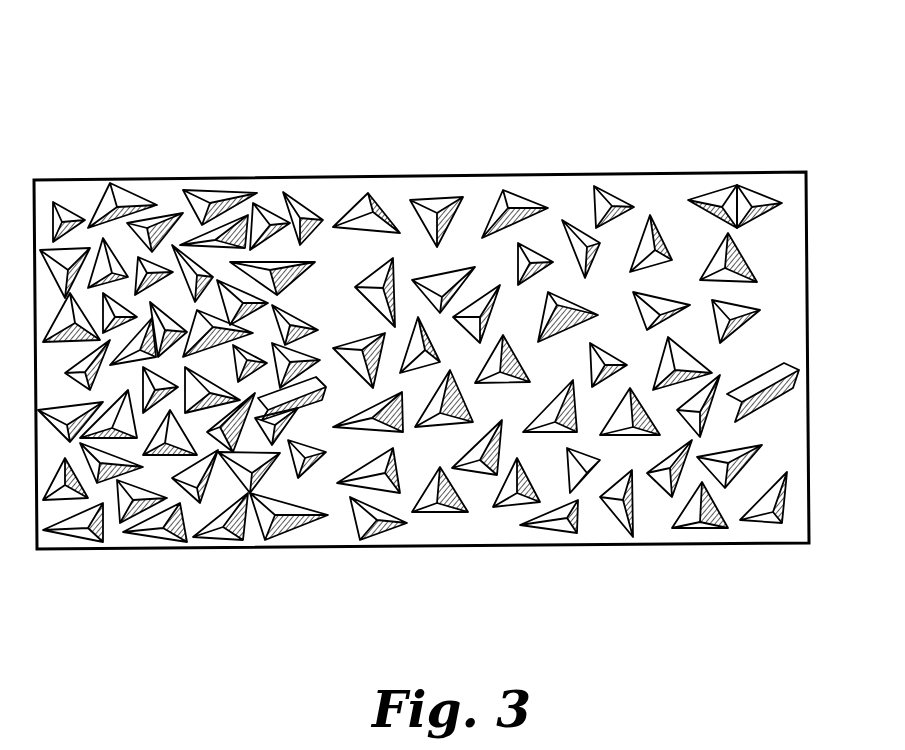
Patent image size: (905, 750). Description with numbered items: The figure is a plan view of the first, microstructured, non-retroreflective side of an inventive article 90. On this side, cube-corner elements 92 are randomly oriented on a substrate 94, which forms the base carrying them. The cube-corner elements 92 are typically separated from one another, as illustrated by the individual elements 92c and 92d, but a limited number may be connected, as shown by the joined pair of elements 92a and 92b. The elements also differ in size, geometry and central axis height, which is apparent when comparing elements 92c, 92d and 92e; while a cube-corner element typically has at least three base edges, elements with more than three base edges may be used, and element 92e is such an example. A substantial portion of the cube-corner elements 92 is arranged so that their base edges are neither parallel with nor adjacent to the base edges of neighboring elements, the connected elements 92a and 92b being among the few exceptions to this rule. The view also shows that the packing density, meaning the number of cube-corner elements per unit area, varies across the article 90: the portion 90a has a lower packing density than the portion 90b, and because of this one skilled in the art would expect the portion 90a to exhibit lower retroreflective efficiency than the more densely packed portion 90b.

The inventive article 90 is at (750, 66).
The portion 90a is at (810, 603).
The portion 90b is at (38, 612).
The cube-corner elements 92 is at (758, 527).
The cube-corner element 92a is at (718, 197).
The cube-corner element 92b is at (754, 197).
The cube-corner element 92c is at (383, 527).
The cube-corner element 92d is at (447, 510).
The cube-corner element 92e is at (768, 398).
The substrate 94 is at (577, 187).